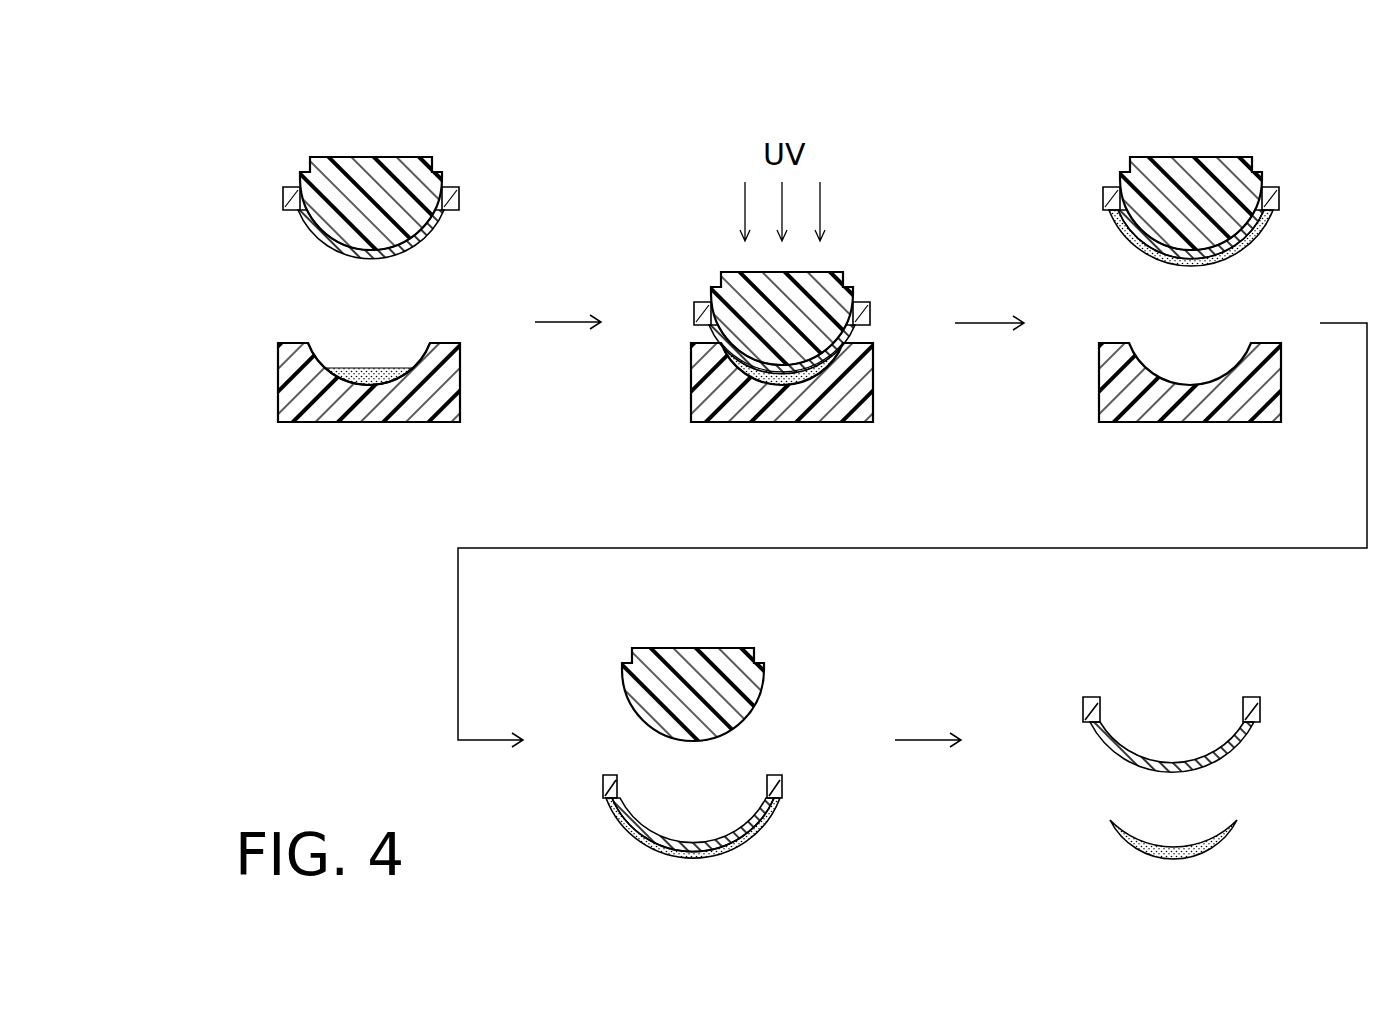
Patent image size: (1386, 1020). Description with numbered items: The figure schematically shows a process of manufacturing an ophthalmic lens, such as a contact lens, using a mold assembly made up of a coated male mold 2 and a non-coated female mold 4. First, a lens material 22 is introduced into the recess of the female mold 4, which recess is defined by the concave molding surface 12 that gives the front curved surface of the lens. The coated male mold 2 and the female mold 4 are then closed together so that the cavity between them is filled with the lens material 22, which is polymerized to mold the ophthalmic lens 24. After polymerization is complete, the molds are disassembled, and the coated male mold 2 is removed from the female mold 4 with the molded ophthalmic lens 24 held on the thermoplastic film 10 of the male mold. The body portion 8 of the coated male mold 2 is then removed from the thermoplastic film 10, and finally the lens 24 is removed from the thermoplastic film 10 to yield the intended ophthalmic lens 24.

The coated male mold 2 is at (275, 156).
The non-coated female mold 4 is at (262, 370).
The body portion 8 is at (405, 162).
The thermoplastic film 10 is at (386, 255).
The concave molding surface 12 is at (422, 362).
The lens material 22 is at (362, 368).
The ophthalmic lens 24 is at (1200, 265).